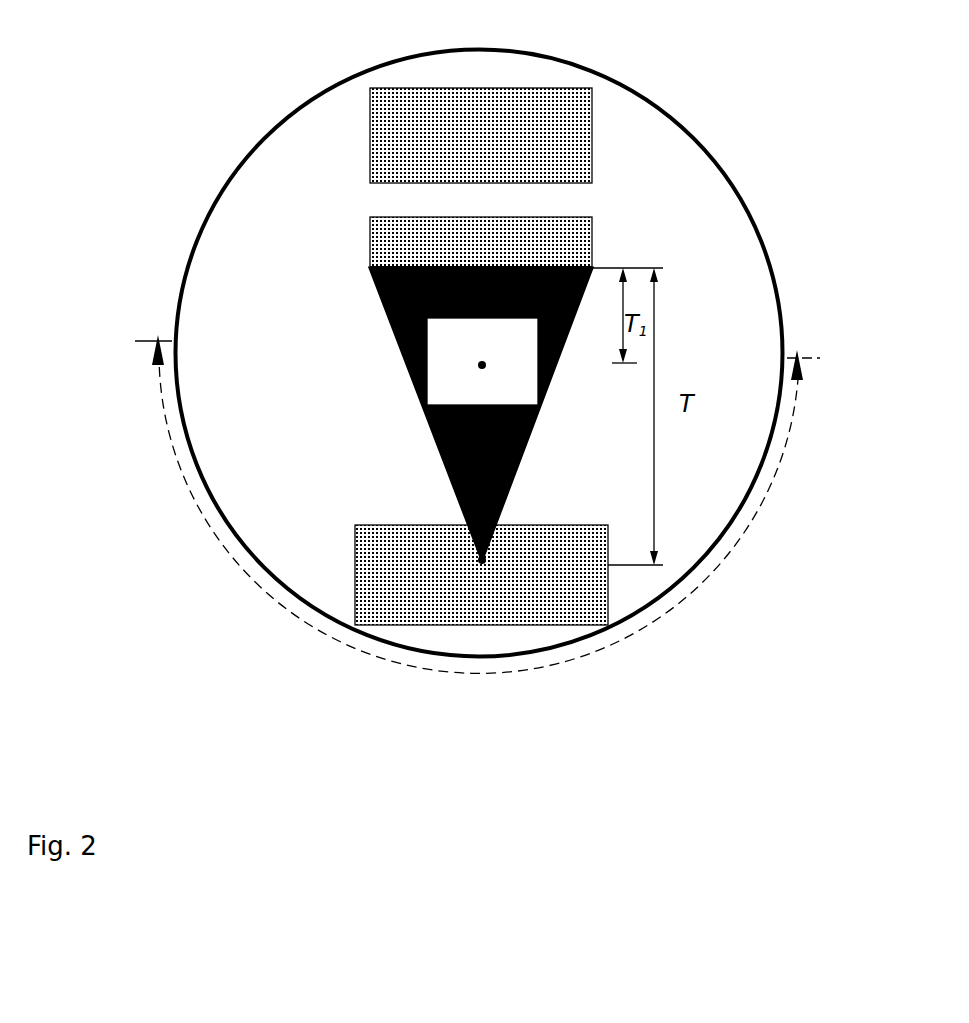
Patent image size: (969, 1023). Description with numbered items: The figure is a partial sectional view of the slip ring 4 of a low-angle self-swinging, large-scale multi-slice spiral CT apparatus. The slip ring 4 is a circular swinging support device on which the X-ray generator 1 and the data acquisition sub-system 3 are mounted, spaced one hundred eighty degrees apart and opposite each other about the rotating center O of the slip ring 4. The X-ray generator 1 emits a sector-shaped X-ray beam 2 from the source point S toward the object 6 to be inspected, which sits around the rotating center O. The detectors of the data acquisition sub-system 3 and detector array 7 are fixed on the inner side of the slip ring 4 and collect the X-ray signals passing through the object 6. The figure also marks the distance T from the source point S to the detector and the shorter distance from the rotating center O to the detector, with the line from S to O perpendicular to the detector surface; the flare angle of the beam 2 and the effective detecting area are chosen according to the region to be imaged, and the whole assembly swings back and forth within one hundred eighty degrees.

The X-ray generator 1 is at (508, 582).
The sector-shaped X-ray beam 2 is at (480, 442).
The data acquisition sub-system 3 is at (523, 240).
The slip ring 4 is at (213, 193).
The object to be inspected 6 is at (470, 364).
The detector array 7 is at (488, 133).